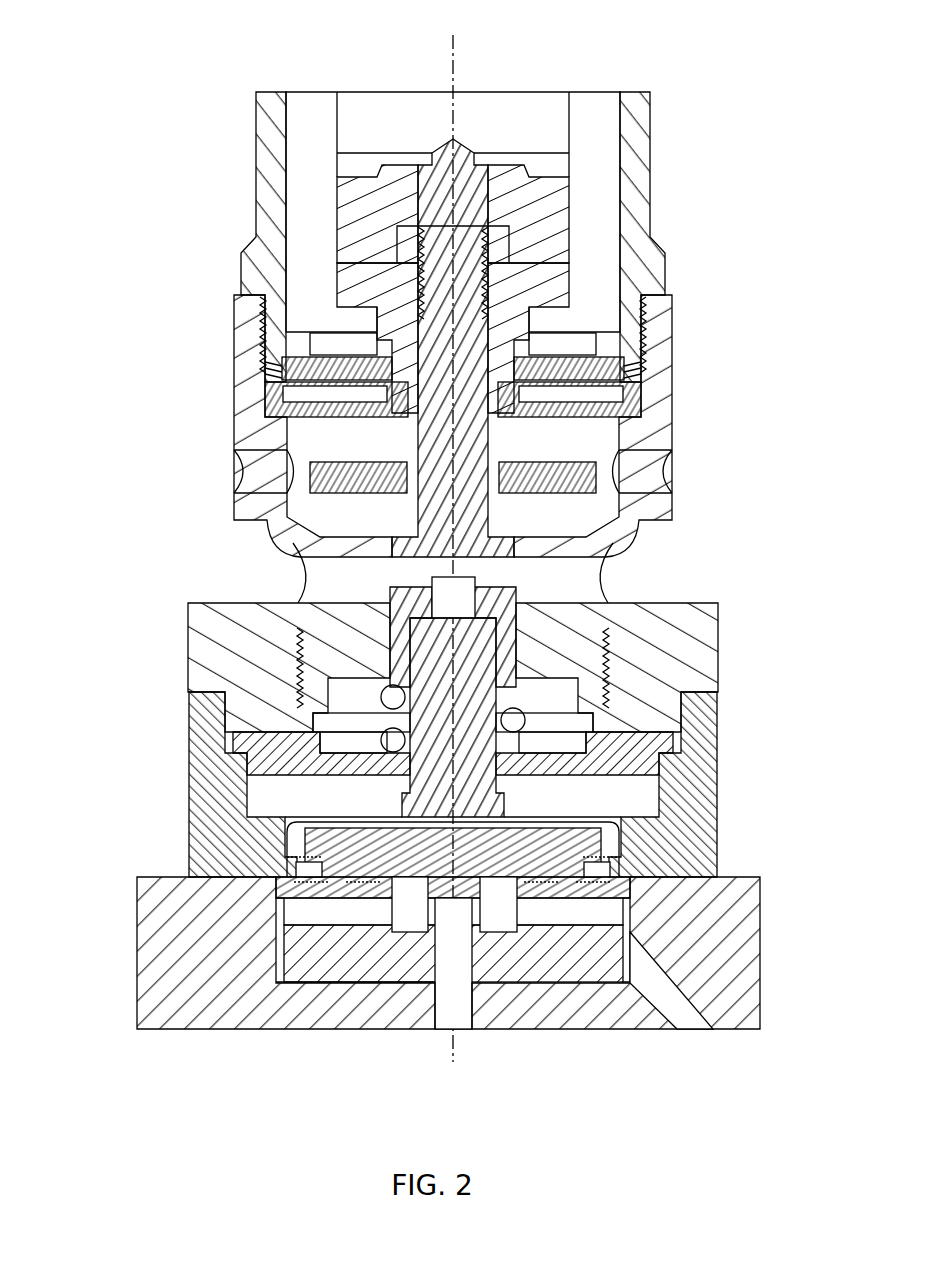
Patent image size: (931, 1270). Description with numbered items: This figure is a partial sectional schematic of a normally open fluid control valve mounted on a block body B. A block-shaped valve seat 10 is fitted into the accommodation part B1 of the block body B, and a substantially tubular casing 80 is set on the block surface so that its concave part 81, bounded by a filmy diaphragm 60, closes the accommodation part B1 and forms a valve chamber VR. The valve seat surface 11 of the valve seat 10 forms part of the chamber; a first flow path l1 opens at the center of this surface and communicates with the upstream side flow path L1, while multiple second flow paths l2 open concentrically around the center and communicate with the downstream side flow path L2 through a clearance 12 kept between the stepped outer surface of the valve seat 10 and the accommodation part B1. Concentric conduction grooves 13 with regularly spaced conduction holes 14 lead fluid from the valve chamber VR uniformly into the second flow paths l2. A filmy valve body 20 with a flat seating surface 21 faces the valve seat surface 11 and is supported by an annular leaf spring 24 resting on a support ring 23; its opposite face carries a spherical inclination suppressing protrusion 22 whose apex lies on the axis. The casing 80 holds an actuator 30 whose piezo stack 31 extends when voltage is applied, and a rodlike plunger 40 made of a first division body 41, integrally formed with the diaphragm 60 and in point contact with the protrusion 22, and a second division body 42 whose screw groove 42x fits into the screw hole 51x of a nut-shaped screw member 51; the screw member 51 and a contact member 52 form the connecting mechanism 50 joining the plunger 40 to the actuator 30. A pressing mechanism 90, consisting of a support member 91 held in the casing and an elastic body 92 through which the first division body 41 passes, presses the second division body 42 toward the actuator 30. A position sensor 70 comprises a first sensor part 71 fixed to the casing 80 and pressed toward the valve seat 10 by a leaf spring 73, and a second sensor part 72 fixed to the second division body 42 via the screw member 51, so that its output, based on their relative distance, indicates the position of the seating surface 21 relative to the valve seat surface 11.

The valve seat 10 is at (333, 975).
The valve seat surface 11 is at (395, 845).
The clearance 12 is at (277, 973).
The conduction grooves 13 is at (303, 882).
The conduction holes 14 is at (285, 888).
The valve body 20 is at (622, 838).
The seating surface 21 is at (603, 882).
The inclination suppressing protrusion 22 is at (500, 815).
The support ring 23 is at (623, 870).
The leaf spring 24 is at (623, 858).
The actuator 30 is at (570, 112).
The piezo stack 31 is at (520, 108).
The plunger 40 is at (473, 413).
The first division body 41 is at (520, 640).
The second division body 42 is at (446, 348).
The screw groove 42x is at (415, 297).
The connecting mechanism 50 is at (529, 280).
The screw member 51 is at (570, 280).
The screw hole 51x is at (644, 304).
The contact member 52 is at (570, 198).
The diaphragm 60 is at (673, 808).
The position sensor 70 is at (378, 426).
The first sensor part 71 is at (237, 420).
The second sensor part 72 is at (237, 392).
The leaf spring 73 is at (268, 368).
The casing 80 is at (250, 135).
The concave part 81 is at (287, 840).
The pressing mechanism 90 is at (385, 689).
The support member 91 is at (225, 732).
The elastic body 92 is at (382, 693).
The block body B is at (162, 963).
The accommodation part B1 is at (387, 987).
The upstream side flow path L1 is at (452, 1000).
The downstream side flow path L2 is at (677, 1010).
The valve chamber VR is at (300, 845).
The first flow path l1 is at (441, 949).
The second flow paths l2 is at (327, 923).